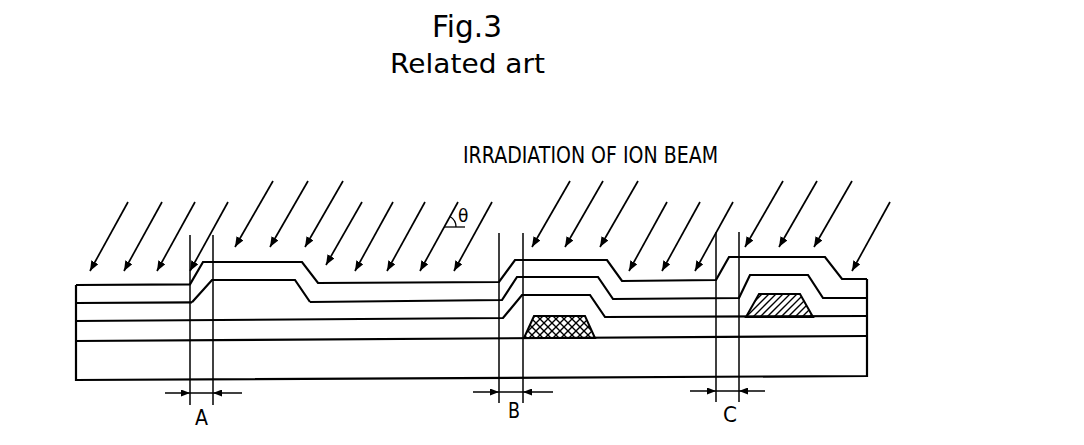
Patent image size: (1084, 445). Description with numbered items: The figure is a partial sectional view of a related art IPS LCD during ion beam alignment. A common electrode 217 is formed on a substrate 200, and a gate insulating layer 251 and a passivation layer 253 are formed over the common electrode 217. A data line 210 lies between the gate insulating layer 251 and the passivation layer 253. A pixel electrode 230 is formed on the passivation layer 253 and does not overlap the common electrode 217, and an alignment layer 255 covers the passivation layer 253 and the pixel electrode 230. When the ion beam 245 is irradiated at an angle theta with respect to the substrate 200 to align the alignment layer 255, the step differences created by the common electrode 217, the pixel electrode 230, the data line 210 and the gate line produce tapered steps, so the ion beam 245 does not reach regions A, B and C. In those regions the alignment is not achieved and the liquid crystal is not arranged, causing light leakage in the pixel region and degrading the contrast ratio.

The ion beam 245 is at (391, 207).
The alignment layer 255 is at (867, 285).
The passivation layer 253 is at (867, 306).
The gate insulating layer 251 is at (867, 328).
The substrate 200 is at (867, 361).
The pixel electrode 230 is at (253, 290).
The common electrode 217 is at (560, 338).
The data line 210 is at (783, 318).